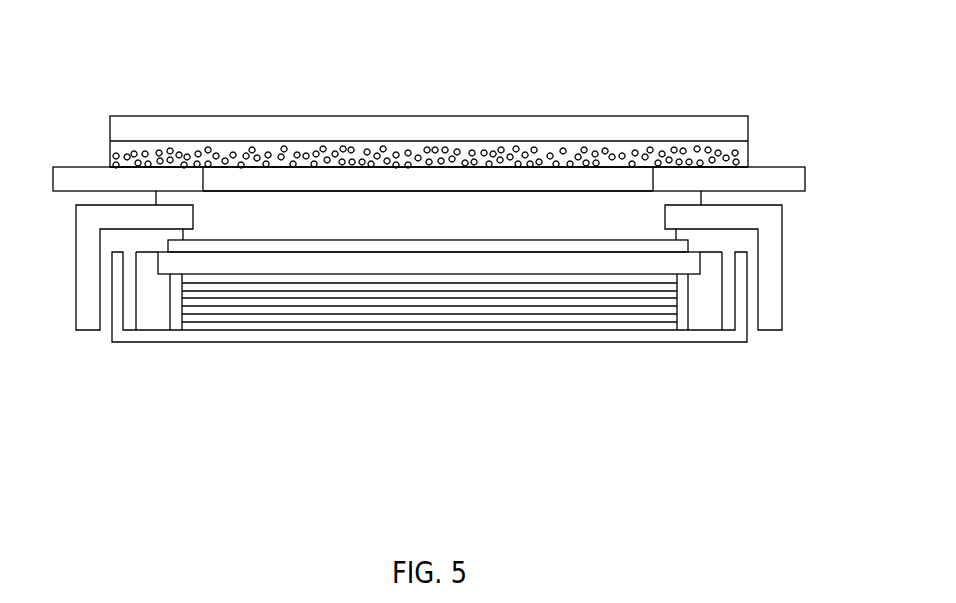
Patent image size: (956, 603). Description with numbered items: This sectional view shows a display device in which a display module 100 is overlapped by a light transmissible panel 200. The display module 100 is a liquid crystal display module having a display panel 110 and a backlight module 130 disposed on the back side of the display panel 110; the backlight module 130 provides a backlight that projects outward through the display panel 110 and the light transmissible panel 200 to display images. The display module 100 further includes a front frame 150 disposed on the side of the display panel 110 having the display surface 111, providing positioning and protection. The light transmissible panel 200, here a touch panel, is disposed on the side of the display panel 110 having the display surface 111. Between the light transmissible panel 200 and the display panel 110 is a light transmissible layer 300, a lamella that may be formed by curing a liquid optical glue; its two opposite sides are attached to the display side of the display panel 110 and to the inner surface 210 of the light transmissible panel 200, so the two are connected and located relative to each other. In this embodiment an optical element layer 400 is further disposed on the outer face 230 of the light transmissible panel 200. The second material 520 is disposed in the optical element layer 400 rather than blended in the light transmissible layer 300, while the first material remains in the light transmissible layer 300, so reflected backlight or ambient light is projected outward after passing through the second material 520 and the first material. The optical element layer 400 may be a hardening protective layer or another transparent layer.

The display module 100 is at (442, 344).
The display panel 110 is at (664, 262).
The display surface 111 is at (310, 240).
The backlight module 130 is at (592, 307).
The front frame 150 is at (575, 396).
The light transmissible panel 200 is at (591, 182).
The inner surface 210 is at (272, 192).
The outer face 230 is at (372, 167).
The light transmissible layer 300 is at (235, 212).
The optical element layer 400 is at (750, 153).
The second material 520 is at (697, 155).